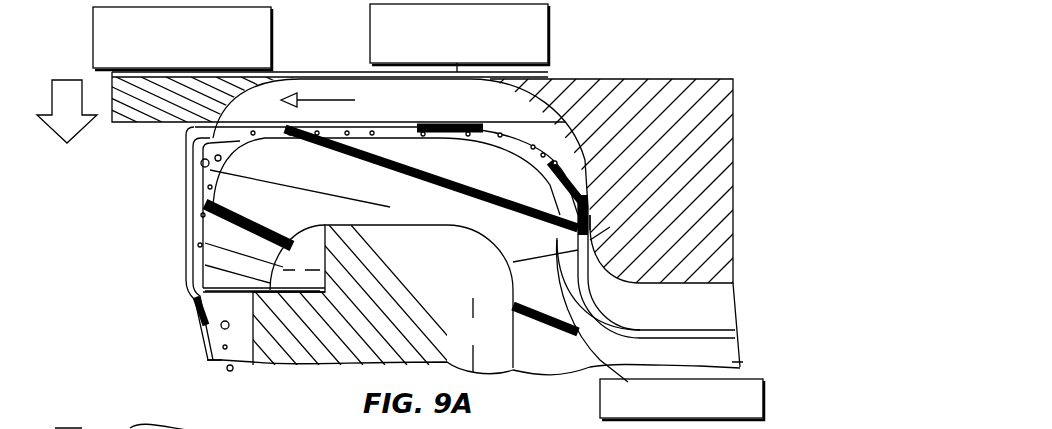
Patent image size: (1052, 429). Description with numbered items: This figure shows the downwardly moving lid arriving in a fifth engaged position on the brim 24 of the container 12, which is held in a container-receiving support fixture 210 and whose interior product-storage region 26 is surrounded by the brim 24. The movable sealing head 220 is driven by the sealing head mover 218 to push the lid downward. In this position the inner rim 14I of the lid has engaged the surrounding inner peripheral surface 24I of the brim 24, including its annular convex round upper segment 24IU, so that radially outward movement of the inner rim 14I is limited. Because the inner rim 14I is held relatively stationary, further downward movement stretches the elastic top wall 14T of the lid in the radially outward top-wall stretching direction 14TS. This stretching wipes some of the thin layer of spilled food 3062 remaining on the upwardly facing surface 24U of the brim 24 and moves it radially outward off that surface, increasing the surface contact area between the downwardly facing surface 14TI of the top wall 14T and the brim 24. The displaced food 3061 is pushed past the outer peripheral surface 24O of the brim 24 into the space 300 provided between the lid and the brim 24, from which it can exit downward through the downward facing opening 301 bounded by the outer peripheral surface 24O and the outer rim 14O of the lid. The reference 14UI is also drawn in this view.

The movable sealing head 220 is at (92, 82).
The top-wall stretching direction 14TS is at (272, 43).
The sealing head mover 218 is at (548, 28).
The top wall 14T is at (488, 108).
The upwardly facing surface 24U is at (382, 134).
The thin layer of spilled food 3062 is at (341, 147).
The space 300 is at (215, 112).
The displaced food 3061 is at (197, 166).
The outer rim 14O is at (170, 205).
The outer peripheral surface 24O is at (207, 232).
The downward facing opening 301 is at (217, 308).
The brim 24 is at (376, 245).
The container-receiving support fixture 210 is at (285, 373).
The container 12 is at (544, 392).
The inner peripheral surface 24I is at (738, 283).
The upper segment 24IU is at (567, 123).
The inner rim 14I is at (712, 205).
The upper inner wall 14UI is at (567, 160).
The downwardly facing surface 14TI is at (628, 220).
The interior product-storage region 26 is at (720, 352).